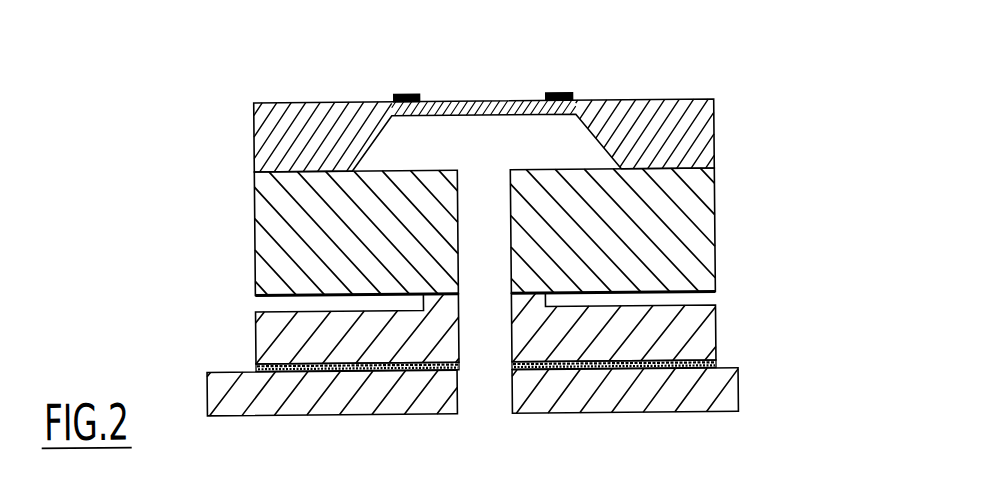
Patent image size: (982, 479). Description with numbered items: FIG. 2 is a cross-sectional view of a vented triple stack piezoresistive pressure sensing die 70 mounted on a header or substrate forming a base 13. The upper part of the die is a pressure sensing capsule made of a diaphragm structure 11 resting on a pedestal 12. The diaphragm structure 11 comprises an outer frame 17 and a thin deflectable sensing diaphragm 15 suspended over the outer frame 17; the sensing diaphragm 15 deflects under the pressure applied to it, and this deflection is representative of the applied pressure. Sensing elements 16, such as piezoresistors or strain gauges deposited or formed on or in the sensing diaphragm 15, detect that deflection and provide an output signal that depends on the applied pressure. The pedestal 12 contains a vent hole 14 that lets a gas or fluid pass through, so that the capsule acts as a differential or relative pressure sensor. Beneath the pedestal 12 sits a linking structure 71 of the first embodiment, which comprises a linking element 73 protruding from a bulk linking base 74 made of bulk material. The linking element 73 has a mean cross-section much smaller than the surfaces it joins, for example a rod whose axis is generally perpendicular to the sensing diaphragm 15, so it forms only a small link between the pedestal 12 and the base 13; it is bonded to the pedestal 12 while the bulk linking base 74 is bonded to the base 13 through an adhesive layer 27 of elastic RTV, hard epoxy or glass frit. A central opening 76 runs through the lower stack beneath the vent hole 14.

The diaphragm structure 11 is at (690, 99).
The pedestal 12 is at (700, 215).
The base 13 is at (727, 396).
The vent hole 14 is at (482, 180).
The sensing diaphragm 15 is at (502, 116).
The sensing elements 16 is at (567, 93).
The outer frame 17 is at (697, 120).
The adhesive layer 27 is at (713, 365).
The sensing die 70 is at (494, 92).
The linking structure 71 is at (480, 370).
The linking element 73 is at (540, 294).
The bulk linking base 74 is at (268, 336).
The channel opening 76 is at (490, 380).